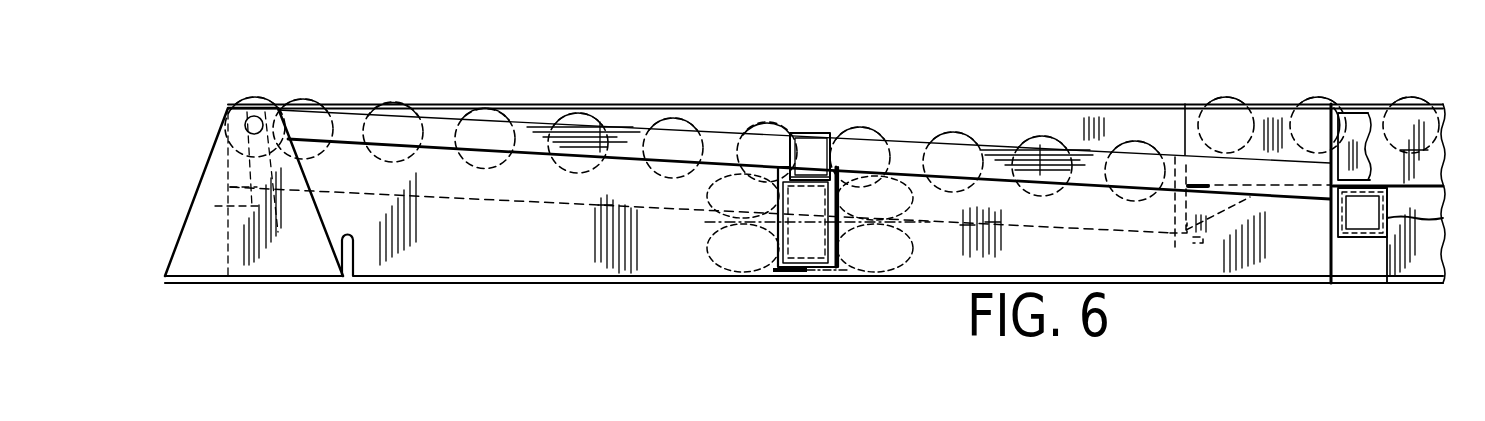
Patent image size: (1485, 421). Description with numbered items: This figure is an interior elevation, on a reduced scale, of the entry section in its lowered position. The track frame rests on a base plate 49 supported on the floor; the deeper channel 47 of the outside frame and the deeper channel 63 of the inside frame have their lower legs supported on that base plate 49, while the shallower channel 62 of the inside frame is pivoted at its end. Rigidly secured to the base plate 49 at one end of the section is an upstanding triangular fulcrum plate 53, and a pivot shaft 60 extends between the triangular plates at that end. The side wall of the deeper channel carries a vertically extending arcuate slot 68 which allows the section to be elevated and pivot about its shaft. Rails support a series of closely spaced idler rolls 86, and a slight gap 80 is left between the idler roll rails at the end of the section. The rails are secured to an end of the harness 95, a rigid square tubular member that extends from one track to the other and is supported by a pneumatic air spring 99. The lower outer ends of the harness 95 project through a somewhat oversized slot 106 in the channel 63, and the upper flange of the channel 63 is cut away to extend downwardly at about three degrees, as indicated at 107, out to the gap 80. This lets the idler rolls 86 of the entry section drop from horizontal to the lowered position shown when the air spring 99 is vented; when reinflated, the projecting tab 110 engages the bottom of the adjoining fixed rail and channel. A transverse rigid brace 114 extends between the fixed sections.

The channel 47 is at (1018, 104).
The base plate 49 is at (214, 280).
The triangular fulcrum plate 53 is at (195, 241).
The pivot shaft 60 is at (245, 123).
The channel 62 is at (1443, 157).
The channel 63 is at (563, 263).
The arcuate slot 68 is at (230, 206).
The gap 80 is at (1182, 101).
The idler rolls 86 is at (694, 108).
The harness 95 is at (812, 135).
The air spring 99 is at (913, 246).
The slot 106 is at (773, 247).
The cut away section 107 is at (907, 137).
The projecting tab 110 is at (1173, 242).
The transverse rigid brace 114 is at (1443, 222).